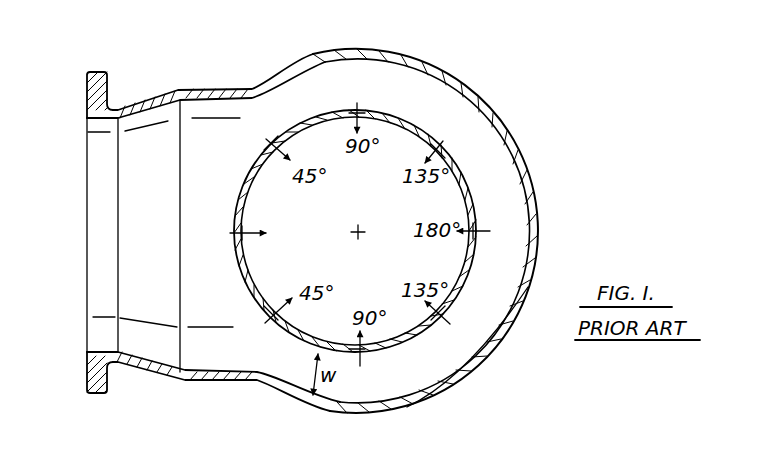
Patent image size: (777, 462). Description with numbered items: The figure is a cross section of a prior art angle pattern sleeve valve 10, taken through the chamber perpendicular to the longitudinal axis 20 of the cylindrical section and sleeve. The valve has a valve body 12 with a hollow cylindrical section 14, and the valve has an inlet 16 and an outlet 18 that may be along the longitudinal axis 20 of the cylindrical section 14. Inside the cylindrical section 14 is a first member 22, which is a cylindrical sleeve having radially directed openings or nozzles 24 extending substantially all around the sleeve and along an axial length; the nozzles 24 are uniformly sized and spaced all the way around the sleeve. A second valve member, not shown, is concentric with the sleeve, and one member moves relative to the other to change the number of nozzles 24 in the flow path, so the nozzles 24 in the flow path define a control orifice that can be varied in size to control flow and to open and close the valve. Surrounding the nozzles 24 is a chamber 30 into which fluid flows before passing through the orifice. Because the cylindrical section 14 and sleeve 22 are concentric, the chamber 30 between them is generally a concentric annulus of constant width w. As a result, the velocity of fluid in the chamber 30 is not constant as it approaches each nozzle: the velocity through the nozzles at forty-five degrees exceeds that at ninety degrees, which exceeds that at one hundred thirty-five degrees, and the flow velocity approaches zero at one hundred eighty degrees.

The angle pattern sleeve valve 10 is at (530, 82).
The valve body 12 is at (205, 88).
The hollow cylindrical section 14 is at (449, 72).
The inlet 16 is at (120, 224).
The outlet 18 is at (450, 211).
The longitudinal axis 20 is at (362, 230).
The first member 22 is at (384, 104).
The nozzles 24 is at (326, 111).
The chamber 30 is at (333, 72).